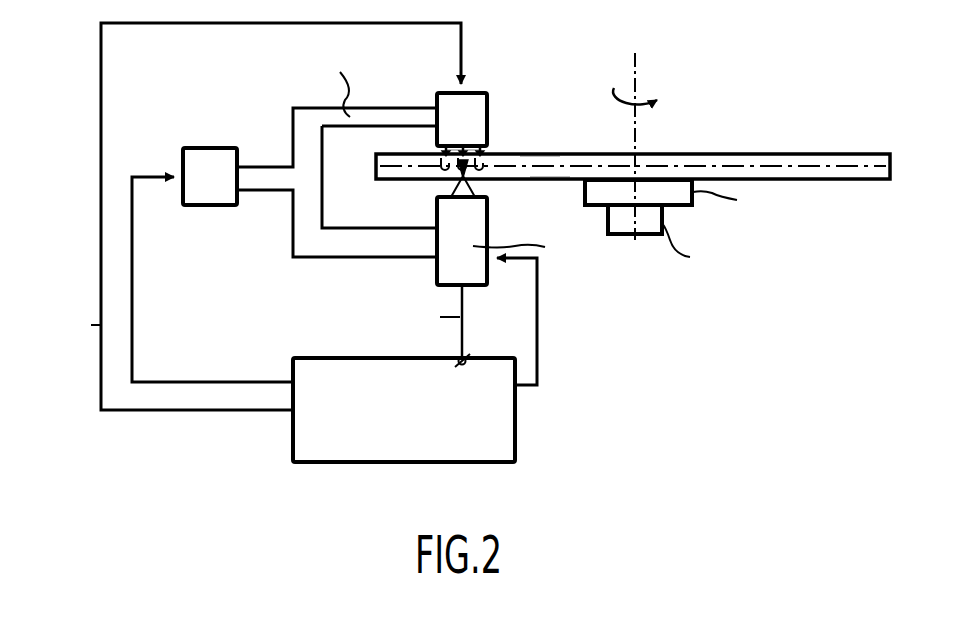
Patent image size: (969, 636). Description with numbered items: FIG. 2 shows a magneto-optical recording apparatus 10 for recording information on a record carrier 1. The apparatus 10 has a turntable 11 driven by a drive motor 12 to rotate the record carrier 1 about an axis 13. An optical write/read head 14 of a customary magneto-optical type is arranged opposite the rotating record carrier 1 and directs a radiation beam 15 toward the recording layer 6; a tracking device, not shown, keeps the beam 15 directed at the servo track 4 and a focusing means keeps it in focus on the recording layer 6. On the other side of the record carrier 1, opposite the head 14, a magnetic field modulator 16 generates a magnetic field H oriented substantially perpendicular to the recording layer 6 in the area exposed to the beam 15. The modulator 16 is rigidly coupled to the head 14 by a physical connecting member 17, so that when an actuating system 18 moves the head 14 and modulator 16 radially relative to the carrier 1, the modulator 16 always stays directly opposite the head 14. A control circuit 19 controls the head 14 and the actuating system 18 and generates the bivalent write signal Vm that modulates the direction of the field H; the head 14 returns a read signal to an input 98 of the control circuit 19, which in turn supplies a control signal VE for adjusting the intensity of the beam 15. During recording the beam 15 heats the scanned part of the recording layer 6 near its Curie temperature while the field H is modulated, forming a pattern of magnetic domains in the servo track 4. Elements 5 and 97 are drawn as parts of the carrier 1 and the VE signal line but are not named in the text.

The magneto-optical recording apparatus 10 is at (568, 30).
The record carrier 1 is at (757, 132).
The servo track 4 is at (443, 153).
The magnetic field H is at (478, 152).
The disc substrate 5 is at (563, 173).
The recording layer 6 is at (530, 167).
The turntable 11 is at (678, 193).
The drive motor 12 is at (650, 222).
The axis 13 is at (640, 62).
The optical write/read head 14 is at (477, 232).
The radiation beam 15 is at (458, 191).
The magnetic field modulator 16 is at (475, 113).
The connecting member 17 is at (367, 117).
The actuating system 18 is at (206, 148).
The control circuit 19 is at (502, 433).
The erase signal line 97 is at (538, 278).
The input 98 is at (455, 358).